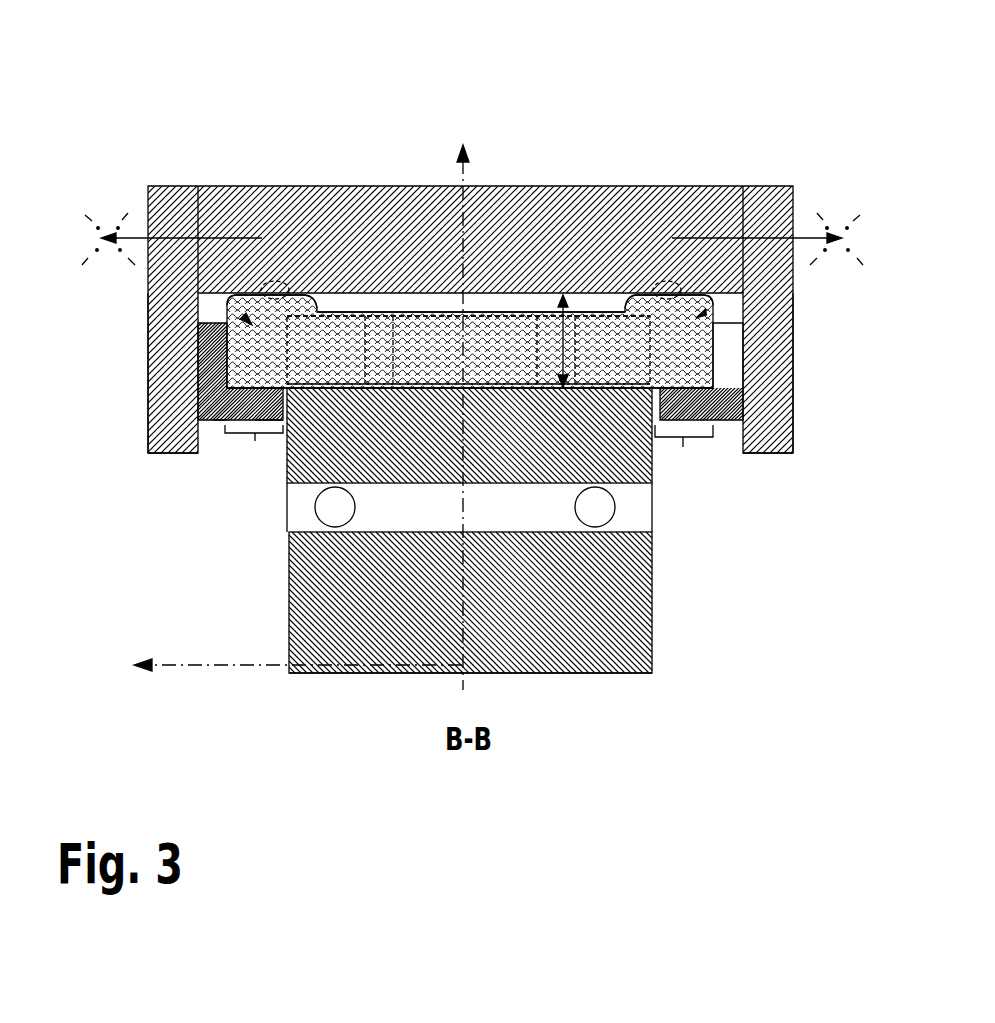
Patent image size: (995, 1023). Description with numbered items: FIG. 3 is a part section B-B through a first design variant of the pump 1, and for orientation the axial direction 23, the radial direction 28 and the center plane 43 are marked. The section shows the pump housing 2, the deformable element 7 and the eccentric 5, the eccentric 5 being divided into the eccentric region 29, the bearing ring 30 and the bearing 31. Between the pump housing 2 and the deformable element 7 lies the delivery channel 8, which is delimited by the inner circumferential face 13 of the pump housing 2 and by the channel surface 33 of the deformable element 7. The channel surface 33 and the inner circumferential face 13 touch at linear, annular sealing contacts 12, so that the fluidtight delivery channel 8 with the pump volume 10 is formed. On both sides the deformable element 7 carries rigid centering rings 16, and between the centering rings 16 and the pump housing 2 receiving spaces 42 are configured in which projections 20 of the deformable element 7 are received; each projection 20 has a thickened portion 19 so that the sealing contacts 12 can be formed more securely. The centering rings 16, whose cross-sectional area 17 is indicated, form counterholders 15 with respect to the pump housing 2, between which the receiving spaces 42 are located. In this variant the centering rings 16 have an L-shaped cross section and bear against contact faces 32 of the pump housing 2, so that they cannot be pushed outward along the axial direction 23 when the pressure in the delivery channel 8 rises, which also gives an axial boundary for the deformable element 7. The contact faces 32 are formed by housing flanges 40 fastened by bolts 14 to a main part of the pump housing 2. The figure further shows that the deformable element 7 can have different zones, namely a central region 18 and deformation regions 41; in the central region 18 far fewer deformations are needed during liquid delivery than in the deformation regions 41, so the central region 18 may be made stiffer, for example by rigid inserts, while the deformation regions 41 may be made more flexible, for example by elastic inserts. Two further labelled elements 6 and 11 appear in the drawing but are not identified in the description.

The pump 1 is at (197, 131).
The pump housing 2 is at (578, 313).
The eccentric 5 is at (653, 567).
The seal bottom layer 6 is at (600, 325).
The deformable element 7 is at (343, 296).
The delivery channel 8 is at (510, 313).
The pump volume 10 is at (537, 313).
The inner layer segment 11 is at (597, 383).
The sealing contact 12 is at (277, 288).
The inner circumferential face 13 is at (383, 310).
The bolt 14 is at (105, 236).
The counterholder 15 is at (220, 422).
The centering ring 16 is at (207, 422).
The rectangular cross-sectional area 17 is at (269, 422).
The central region 18 is at (530, 363).
The thickened portion 19 is at (302, 297).
The projection 20 is at (255, 440).
The axial direction 23 is at (180, 663).
The radial direction 28 is at (445, 213).
The eccentric region 29 is at (652, 627).
The bearing ring 30 is at (653, 481).
The bearing 31 is at (616, 507).
The contact face 32 is at (200, 455).
The channel surface 33 is at (490, 313).
The housing flange 40 is at (148, 337).
The deformation region 41 is at (363, 368).
The receiving space 42 is at (243, 315).
The center plane 43 is at (460, 170).